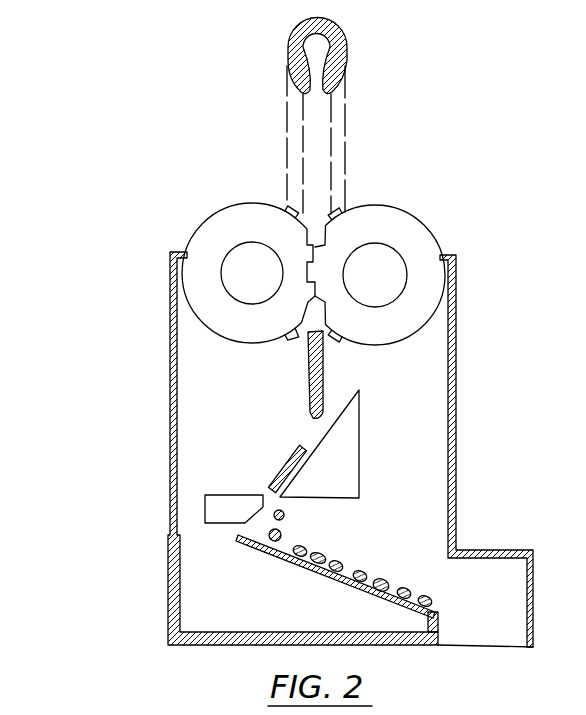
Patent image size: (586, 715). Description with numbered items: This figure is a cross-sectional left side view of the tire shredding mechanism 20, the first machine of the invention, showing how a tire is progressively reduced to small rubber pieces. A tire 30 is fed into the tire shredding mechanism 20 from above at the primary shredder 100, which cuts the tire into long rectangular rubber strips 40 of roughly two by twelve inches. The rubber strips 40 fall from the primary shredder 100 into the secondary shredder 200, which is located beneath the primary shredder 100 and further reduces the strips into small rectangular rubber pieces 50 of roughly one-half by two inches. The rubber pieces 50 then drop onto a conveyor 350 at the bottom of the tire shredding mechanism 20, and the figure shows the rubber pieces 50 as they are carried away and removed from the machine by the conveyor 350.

The tire shredding mechanism 20 is at (148, 386).
The tire 30 is at (340, 32).
The rubber strips 40 is at (323, 380).
The rubber pieces 50 is at (332, 562).
The primary shredder 100 is at (420, 216).
The secondary shredder 200 is at (360, 438).
The conveyor 350 is at (335, 580).